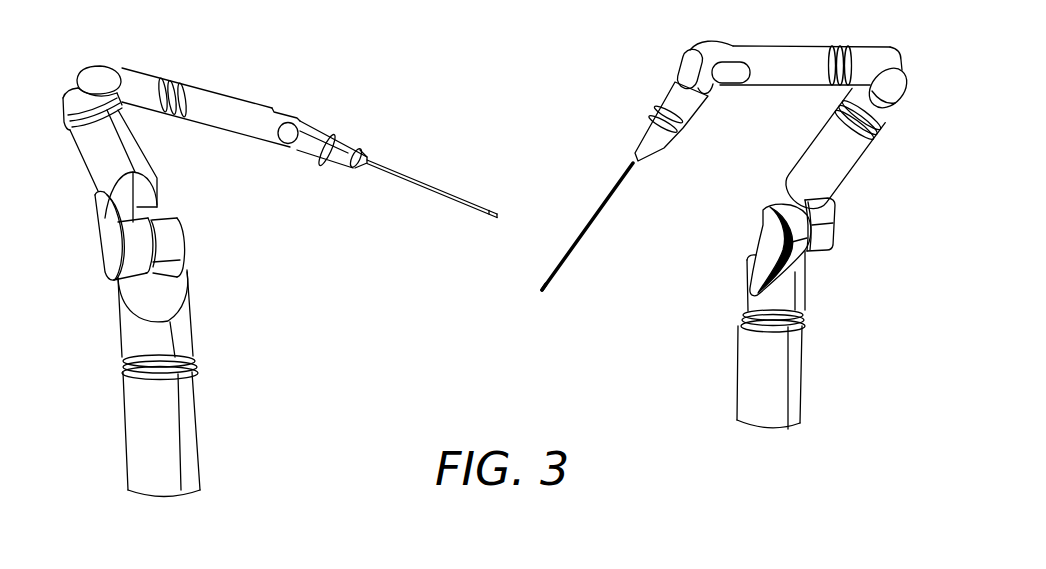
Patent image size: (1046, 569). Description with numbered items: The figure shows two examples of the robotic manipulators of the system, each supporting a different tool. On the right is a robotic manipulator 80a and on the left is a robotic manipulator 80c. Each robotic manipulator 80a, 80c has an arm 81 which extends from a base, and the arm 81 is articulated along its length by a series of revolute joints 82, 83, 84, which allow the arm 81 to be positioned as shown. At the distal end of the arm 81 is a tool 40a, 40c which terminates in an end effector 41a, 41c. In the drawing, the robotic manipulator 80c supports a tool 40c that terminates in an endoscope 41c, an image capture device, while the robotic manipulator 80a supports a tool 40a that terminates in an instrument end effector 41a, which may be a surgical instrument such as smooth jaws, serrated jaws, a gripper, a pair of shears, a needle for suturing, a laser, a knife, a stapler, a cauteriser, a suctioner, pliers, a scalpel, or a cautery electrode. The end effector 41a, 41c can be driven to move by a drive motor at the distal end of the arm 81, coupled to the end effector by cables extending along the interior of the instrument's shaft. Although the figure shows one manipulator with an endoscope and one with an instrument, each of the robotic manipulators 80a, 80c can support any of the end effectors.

The robotic manipulator 80a is at (845, 297).
The robotic manipulator 80c is at (275, 251).
The arm 81 is at (135, 427).
The revolute joint 82 is at (291, 117).
The revolute joint 83 is at (101, 66).
The revolute joint 84 is at (100, 258).
The tool 40a is at (595, 237).
The tool 40c is at (425, 193).
The end effector 41a is at (543, 293).
The end effector 41c is at (499, 214).